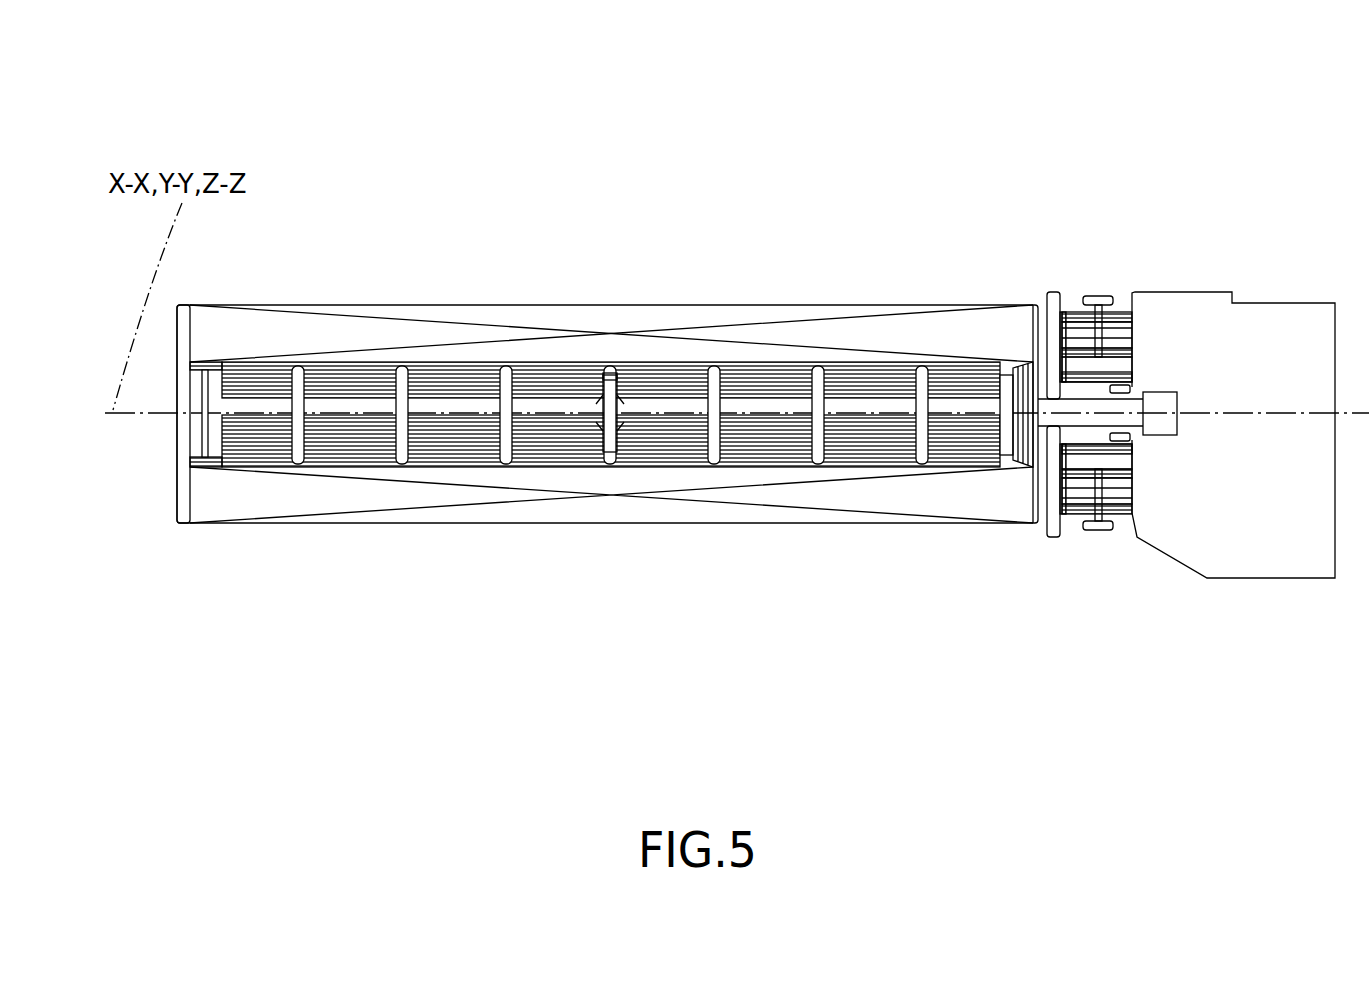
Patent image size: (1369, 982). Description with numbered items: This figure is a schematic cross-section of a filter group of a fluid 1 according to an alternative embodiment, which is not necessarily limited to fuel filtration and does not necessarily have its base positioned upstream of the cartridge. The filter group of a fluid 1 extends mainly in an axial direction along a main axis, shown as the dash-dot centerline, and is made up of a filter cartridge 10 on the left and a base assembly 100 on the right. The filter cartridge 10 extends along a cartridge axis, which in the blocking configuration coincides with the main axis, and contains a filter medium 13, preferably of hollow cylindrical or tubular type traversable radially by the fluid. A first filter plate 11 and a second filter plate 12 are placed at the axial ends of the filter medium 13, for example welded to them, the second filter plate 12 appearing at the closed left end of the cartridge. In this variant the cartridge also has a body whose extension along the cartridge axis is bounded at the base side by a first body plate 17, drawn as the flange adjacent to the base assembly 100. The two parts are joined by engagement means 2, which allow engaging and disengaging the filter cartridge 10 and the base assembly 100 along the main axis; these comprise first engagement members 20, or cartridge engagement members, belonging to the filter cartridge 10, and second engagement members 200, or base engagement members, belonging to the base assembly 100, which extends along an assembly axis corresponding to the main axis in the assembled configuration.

The filter group of a fluid 1 is at (667, 103).
The engagement means 2 is at (1100, 262).
The filter cartridge 10 is at (833, 275).
The first filter plate 11 is at (1066, 490).
The second filter plate 12 is at (183, 513).
The filter medium 13 is at (463, 333).
The first body plate 17 is at (1053, 523).
The first engagement members 20 is at (1072, 298).
The base assembly 100 is at (1225, 228).
The second engagement members 200 is at (1118, 330).